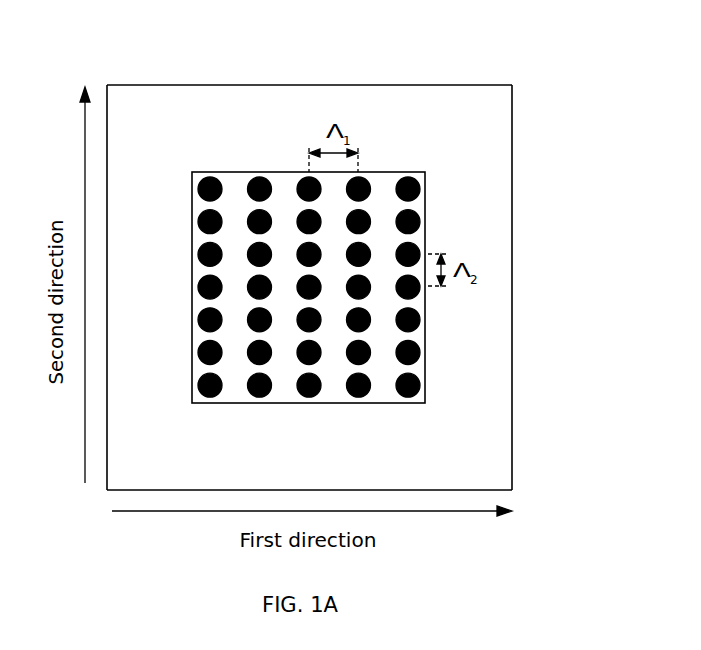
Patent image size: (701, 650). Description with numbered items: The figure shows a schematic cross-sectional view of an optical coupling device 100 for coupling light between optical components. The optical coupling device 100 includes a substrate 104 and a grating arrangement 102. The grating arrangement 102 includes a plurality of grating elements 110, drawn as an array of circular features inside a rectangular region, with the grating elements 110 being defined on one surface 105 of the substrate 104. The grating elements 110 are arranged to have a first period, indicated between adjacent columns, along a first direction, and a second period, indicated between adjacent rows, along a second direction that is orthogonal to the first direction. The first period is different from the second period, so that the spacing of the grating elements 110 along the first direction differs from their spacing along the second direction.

The optical coupling device 100 is at (132, 70).
The grating arrangement 102 is at (222, 173).
The substrate 104 is at (118, 478).
The surface 105 is at (490, 148).
The grating elements 110 is at (199, 251).